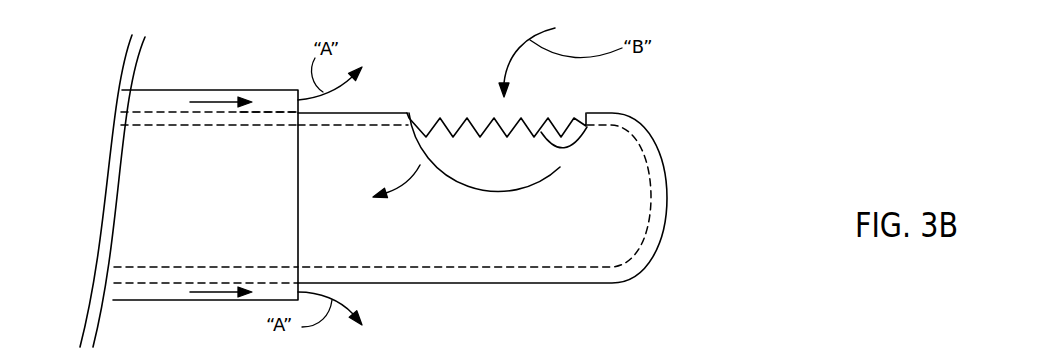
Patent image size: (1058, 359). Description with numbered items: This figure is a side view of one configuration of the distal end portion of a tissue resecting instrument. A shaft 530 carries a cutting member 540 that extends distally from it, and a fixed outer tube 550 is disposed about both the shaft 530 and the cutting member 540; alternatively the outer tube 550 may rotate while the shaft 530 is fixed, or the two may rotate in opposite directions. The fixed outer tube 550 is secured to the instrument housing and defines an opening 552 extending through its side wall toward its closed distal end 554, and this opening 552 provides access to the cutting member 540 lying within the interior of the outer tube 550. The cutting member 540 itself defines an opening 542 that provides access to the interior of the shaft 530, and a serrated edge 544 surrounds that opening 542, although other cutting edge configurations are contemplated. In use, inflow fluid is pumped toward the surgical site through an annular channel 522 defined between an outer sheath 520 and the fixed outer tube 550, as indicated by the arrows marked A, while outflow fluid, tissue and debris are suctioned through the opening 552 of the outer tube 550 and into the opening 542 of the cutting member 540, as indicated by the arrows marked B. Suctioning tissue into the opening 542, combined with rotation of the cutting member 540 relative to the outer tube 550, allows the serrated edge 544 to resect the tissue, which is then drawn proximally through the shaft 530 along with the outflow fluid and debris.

The outer sheath 520 is at (178, 90).
The annular channel 522 is at (272, 100).
The shaft 530 is at (167, 267).
The cutting member 540 is at (637, 243).
The opening 542 is at (560, 123).
The serrated edge 544 is at (560, 167).
The fixed outer tube 550 is at (365, 112).
The opening 552 is at (500, 177).
The closed distal end 554 is at (667, 213).